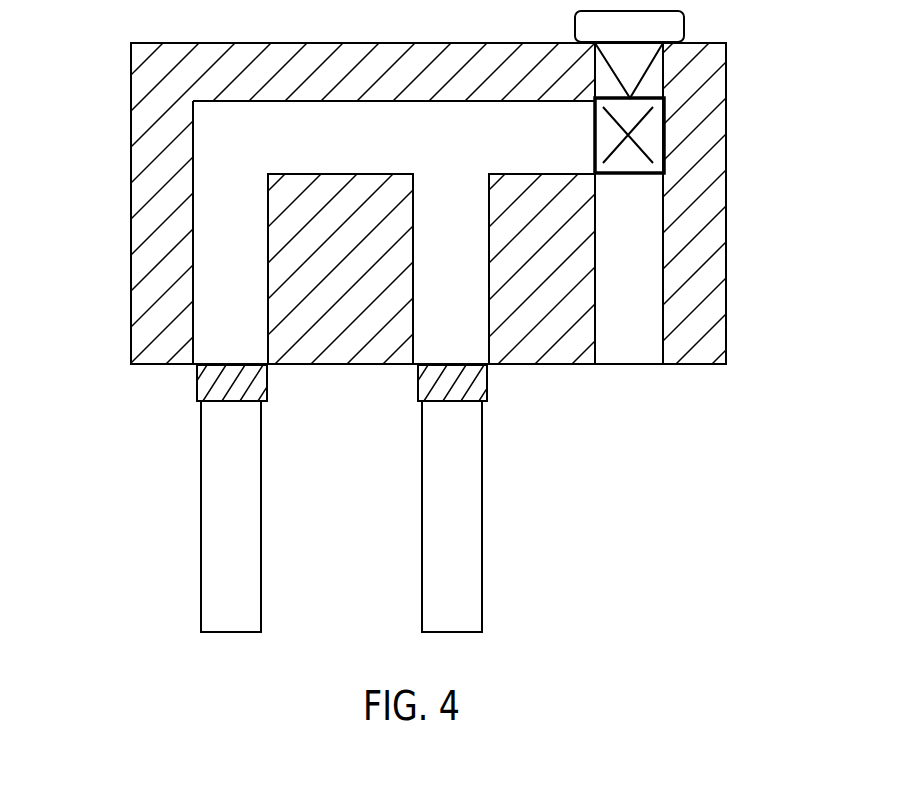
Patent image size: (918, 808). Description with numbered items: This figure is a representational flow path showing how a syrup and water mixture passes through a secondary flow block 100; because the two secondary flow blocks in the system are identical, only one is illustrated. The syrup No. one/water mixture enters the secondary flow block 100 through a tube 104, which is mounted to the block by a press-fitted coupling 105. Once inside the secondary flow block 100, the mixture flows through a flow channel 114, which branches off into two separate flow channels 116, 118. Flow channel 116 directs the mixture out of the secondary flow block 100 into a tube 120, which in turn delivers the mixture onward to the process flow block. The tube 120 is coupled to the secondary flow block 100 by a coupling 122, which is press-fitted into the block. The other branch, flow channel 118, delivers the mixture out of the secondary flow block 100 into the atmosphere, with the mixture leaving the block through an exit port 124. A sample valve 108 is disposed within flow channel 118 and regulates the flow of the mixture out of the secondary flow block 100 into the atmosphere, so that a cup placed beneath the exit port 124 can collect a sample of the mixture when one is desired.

The secondary flow block 100 is at (143, 130).
The tube 104 is at (238, 533).
The press-fitted coupling 105 is at (245, 389).
The sample valve 108 is at (650, 138).
The flow channel 114 is at (200, 272).
The flow channel 116 is at (430, 266).
The flow channel 118 is at (655, 268).
The tube 120 is at (458, 525).
The coupling 122 is at (458, 389).
The exit port 124 is at (640, 378).